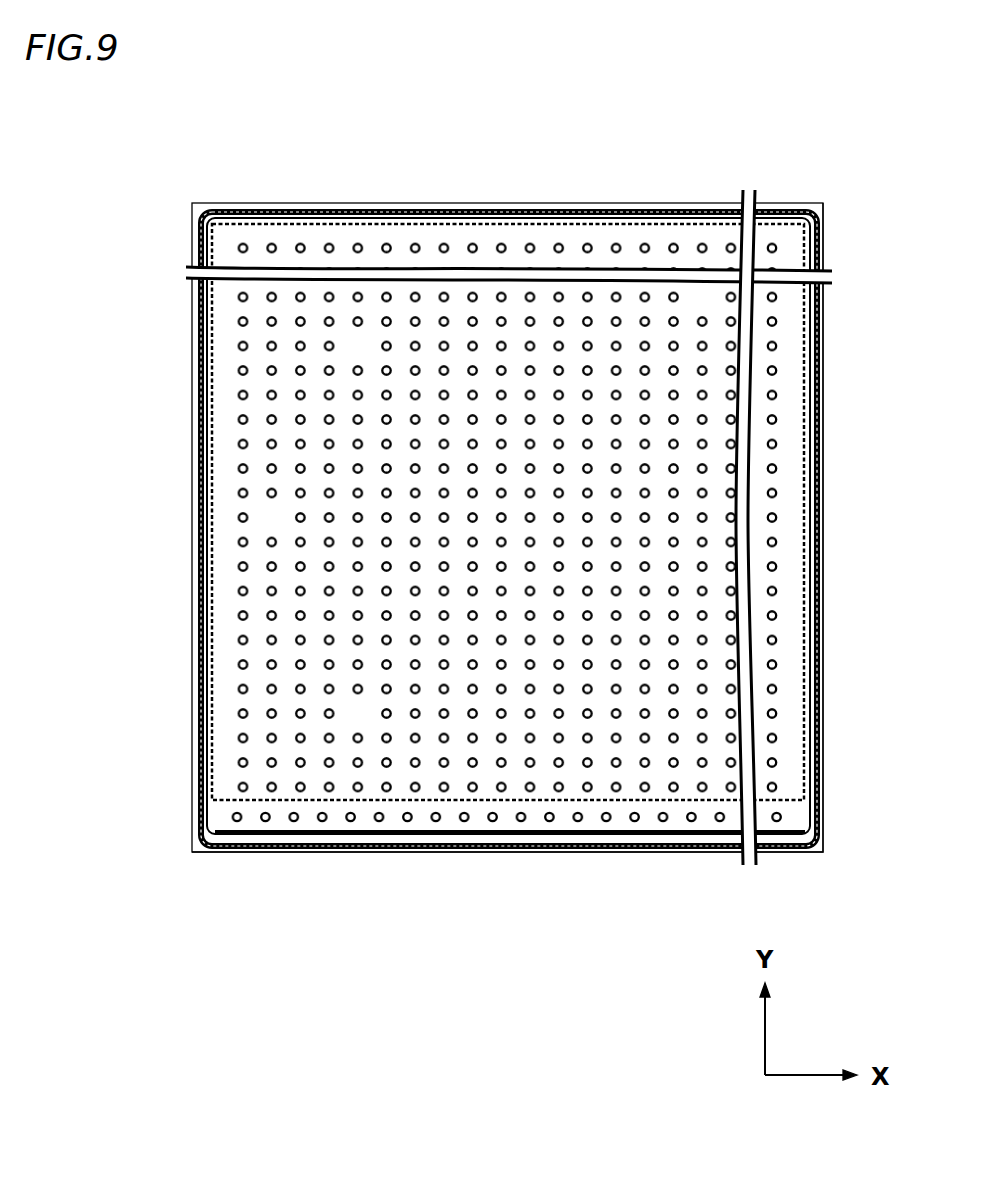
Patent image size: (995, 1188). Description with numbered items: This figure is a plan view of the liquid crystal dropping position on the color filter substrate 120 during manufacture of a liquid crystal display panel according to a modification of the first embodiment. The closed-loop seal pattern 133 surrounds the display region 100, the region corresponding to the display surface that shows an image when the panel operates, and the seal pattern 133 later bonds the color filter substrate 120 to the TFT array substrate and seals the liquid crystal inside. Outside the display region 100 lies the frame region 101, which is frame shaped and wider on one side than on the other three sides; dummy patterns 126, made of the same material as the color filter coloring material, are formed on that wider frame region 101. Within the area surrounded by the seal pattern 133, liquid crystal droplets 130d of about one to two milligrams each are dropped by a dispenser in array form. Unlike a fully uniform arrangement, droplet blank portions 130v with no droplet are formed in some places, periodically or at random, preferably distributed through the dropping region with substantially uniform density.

The display region 100 is at (217, 452).
The color filter substrate 120 is at (195, 549).
The dummy pattern 126 is at (477, 842).
The frame region 101 is at (336, 826).
The seal pattern 133 is at (206, 854).
The droplet blank portion 130v is at (705, 293).
The liquid crystal droplet 130d is at (646, 792).